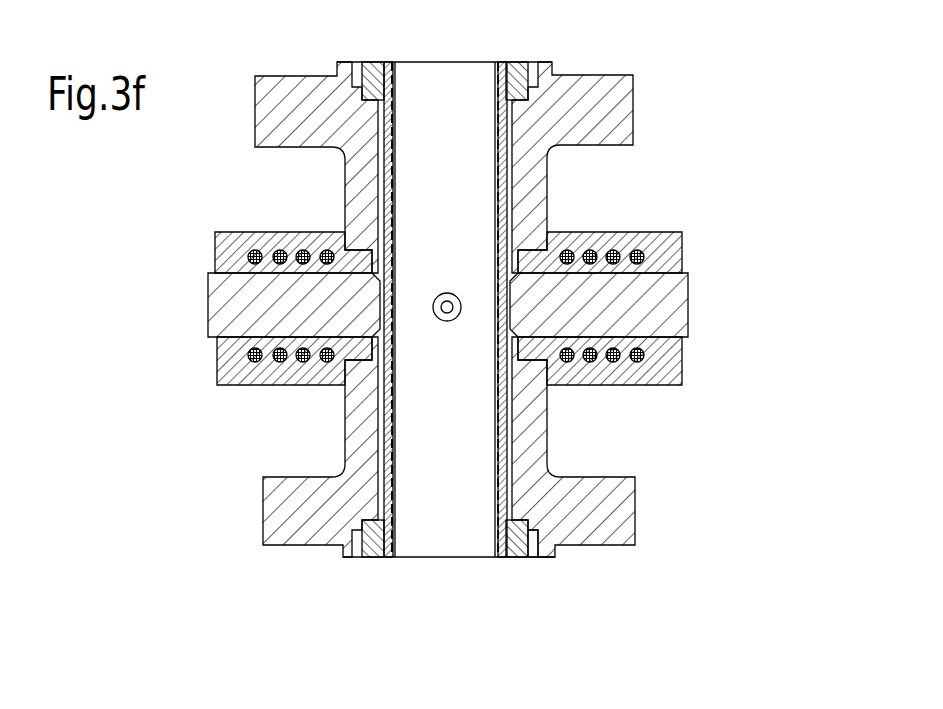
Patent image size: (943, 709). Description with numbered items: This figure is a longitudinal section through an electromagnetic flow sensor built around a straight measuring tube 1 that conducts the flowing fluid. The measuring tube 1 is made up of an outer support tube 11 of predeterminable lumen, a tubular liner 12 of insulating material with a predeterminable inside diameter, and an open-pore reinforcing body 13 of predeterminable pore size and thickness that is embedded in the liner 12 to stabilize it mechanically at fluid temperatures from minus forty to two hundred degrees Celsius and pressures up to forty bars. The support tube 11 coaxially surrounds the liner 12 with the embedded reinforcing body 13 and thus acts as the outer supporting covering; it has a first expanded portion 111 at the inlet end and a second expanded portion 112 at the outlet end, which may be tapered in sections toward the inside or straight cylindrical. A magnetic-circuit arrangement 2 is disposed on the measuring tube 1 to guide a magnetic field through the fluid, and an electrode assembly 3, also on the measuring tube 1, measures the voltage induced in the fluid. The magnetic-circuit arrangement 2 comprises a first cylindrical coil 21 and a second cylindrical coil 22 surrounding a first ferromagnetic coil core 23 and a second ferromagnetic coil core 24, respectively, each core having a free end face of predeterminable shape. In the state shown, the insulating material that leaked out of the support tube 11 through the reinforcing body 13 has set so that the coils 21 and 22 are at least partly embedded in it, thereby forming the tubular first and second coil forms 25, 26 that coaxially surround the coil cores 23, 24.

The measuring tube 1 is at (510, 154).
The support tube 11 is at (491, 474).
The first expanded portion 111 is at (518, 92).
The second expanded portion 112 is at (532, 517).
The tubular liner 12 is at (378, 557).
The open-pore reinforcing body 13 is at (513, 532).
The magnetic-circuit arrangement 2 is at (462, 296).
The first cylindrical coil 21 is at (257, 250).
The second cylindrical coil 22 is at (647, 231).
The first ferromagnetic coil core 23 is at (212, 314).
The second ferromagnetic coil core 24 is at (673, 313).
The first coil form 25 is at (238, 386).
The second coil form 26 is at (681, 386).
The electrode assembly 3 is at (446, 262).